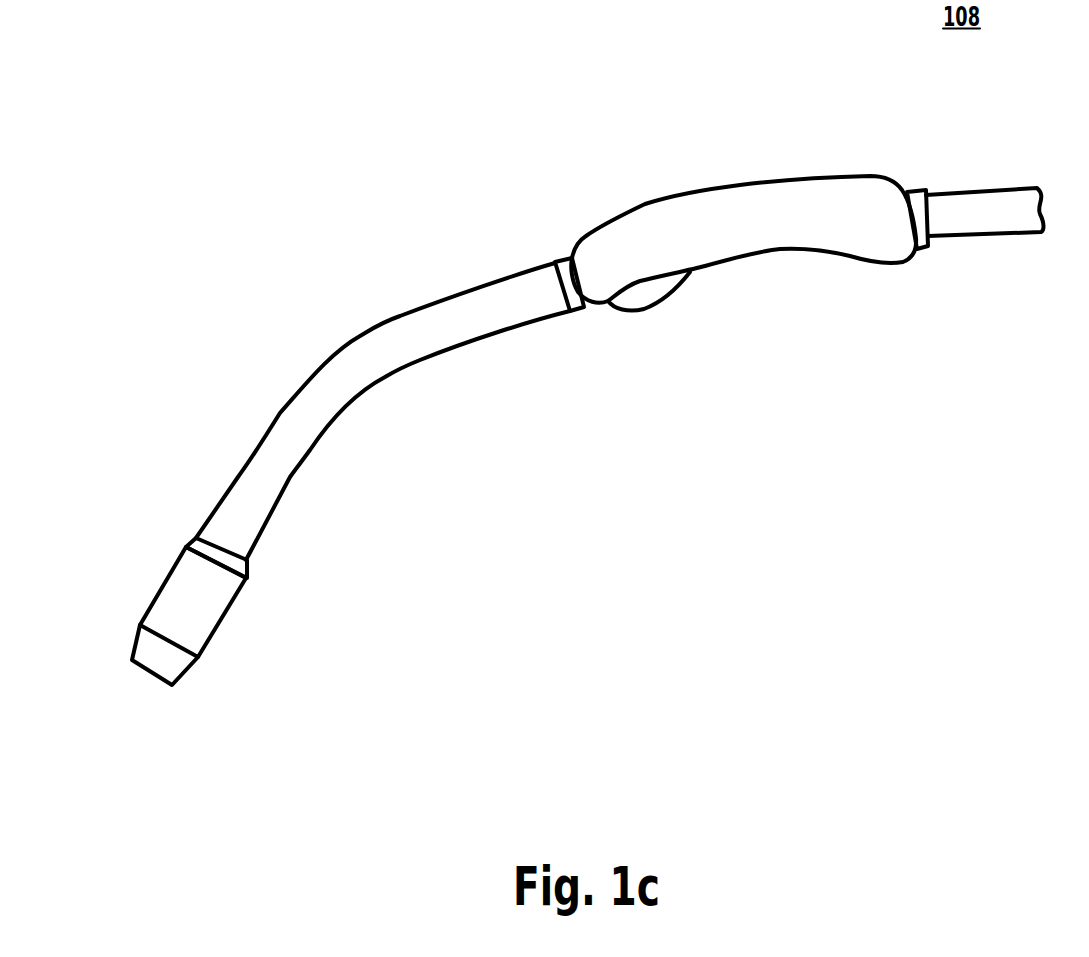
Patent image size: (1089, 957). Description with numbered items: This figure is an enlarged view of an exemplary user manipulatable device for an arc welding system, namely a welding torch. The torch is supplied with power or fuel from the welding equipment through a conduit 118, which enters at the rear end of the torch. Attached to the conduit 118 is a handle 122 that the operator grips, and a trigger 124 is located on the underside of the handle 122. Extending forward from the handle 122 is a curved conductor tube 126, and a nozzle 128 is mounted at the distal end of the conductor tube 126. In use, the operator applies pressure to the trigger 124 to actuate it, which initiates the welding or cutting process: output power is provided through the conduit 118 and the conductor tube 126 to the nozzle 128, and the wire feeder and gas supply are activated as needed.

The conduit 118 is at (988, 187).
The handle 122 is at (734, 186).
The trigger 124 is at (651, 310).
The conductor tube 126 is at (370, 327).
The nozzle 128 is at (156, 598).